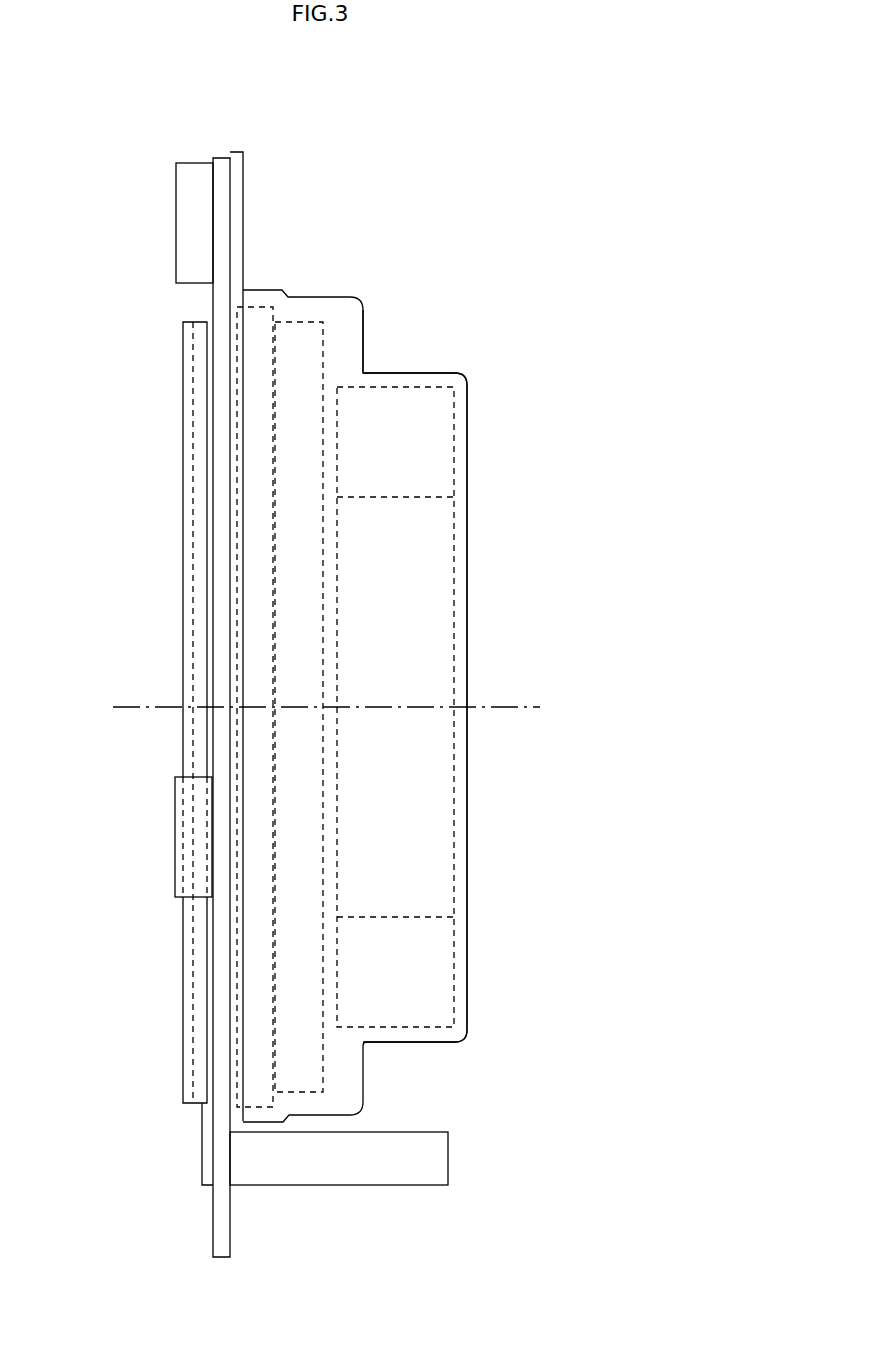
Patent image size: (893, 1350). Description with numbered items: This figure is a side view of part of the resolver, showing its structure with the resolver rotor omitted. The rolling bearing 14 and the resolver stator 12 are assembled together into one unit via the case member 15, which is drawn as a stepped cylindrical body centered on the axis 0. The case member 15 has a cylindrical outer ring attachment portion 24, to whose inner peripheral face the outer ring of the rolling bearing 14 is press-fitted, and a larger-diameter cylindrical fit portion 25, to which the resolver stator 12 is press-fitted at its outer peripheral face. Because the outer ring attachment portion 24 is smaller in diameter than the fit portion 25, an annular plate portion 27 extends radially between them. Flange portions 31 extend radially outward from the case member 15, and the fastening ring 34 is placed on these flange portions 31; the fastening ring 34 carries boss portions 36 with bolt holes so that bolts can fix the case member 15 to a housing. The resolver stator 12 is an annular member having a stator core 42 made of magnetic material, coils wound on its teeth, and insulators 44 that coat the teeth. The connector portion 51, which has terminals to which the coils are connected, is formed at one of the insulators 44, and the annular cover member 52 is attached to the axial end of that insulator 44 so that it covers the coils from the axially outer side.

The axis 0 is at (124, 707).
The resolver stator 12 is at (183, 732).
The rolling bearing 14 is at (420, 497).
The case member 15 is at (377, 666).
The outer ring attachment portion 24 is at (425, 373).
The fit portion 25 is at (313, 298).
The annular plate portion 27 is at (365, 333).
The flange portion 31 is at (244, 188).
The fastening ring 34 is at (213, 305).
The boss portion 36 is at (176, 227).
The stator core 42 is at (228, 1080).
The insulator 44 is at (178, 1043).
The connector portion 51 is at (398, 1186).
The cover member 52 is at (183, 478).